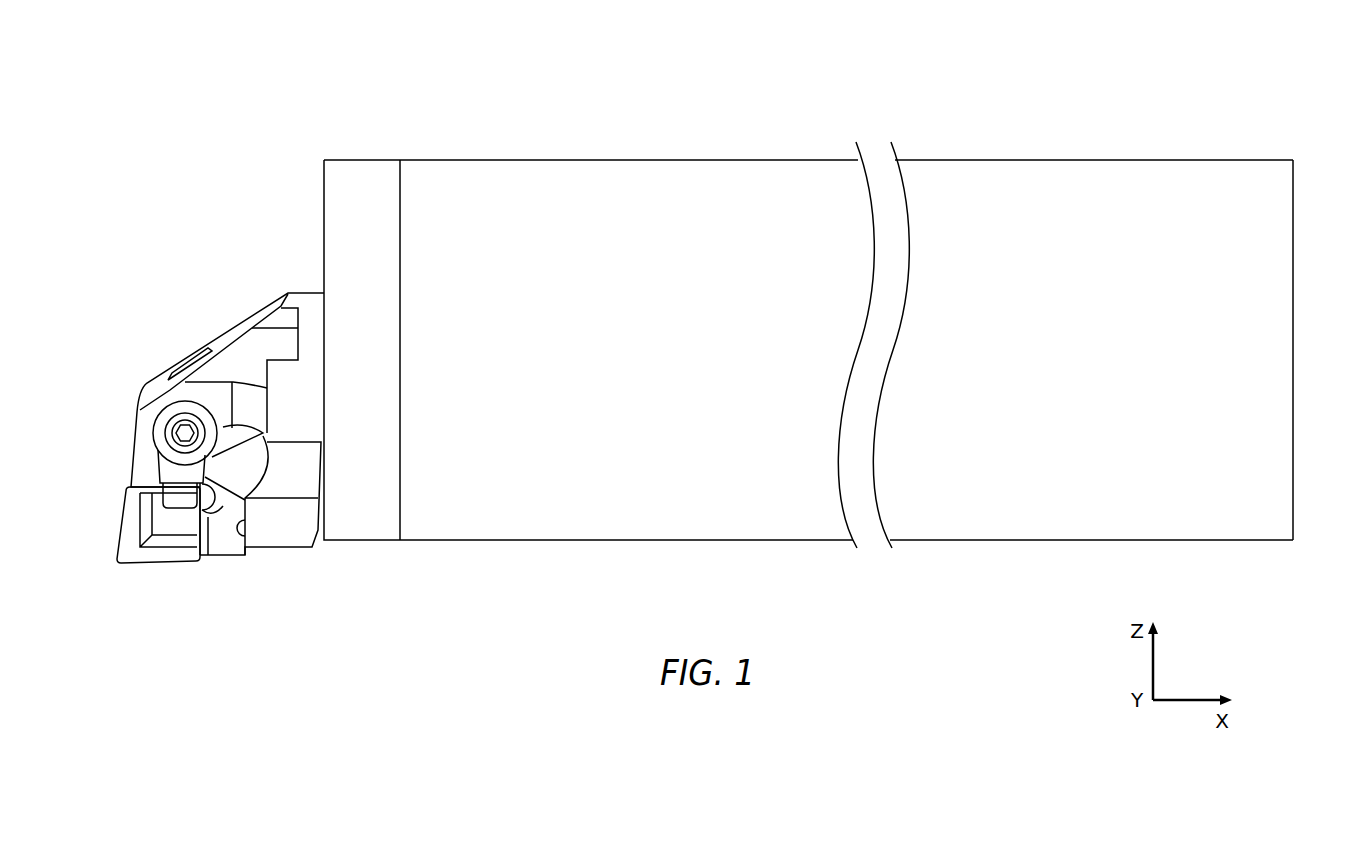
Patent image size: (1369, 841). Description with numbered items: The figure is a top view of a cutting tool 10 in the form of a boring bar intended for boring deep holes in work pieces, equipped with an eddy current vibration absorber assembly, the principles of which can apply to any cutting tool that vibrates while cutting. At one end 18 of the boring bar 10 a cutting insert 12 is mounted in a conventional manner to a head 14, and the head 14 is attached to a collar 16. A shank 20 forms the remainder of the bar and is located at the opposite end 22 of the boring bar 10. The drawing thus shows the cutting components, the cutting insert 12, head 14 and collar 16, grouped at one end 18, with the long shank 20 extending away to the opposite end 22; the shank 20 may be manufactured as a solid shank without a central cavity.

The cutting tool 10 is at (203, 115).
The cutting insert 12 is at (155, 565).
The head 14 is at (130, 457).
The collar 16 is at (370, 145).
The end 18 is at (130, 398).
The shank 20 is at (1256, 143).
The opposite end 22 is at (1302, 257).